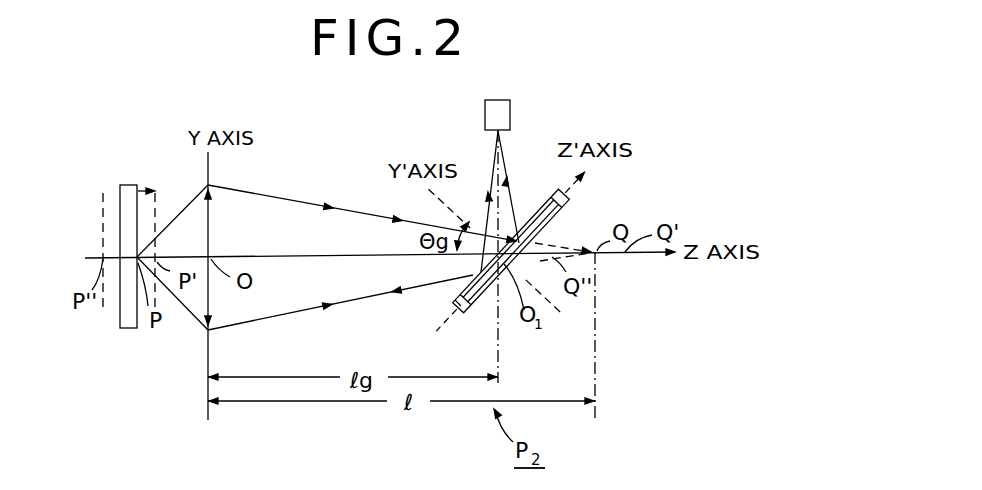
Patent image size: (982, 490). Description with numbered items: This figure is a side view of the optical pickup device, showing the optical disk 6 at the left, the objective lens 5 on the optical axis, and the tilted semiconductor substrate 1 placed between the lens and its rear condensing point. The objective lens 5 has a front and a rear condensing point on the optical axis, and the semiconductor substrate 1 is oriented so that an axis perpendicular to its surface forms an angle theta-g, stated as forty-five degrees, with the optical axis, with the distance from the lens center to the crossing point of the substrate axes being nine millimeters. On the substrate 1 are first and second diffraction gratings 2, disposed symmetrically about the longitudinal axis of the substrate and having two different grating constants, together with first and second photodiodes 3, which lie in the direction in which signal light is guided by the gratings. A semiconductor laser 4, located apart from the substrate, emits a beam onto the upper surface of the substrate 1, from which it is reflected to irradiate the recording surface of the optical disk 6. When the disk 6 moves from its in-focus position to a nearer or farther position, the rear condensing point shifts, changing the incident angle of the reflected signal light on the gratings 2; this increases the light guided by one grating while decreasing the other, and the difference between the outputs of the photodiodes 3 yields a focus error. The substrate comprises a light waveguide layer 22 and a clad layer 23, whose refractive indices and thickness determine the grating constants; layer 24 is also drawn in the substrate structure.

The semiconductor substrate 1 is at (512, 261).
The diffraction grating 2 is at (514, 240).
The photodiode 3 is at (555, 197).
The semiconductor laser 4 is at (498, 100).
The objective lens 5 is at (212, 218).
The optical disk 6 is at (128, 185).
The light waveguide layer 22 is at (486, 292).
The clad layer 23 is at (452, 312).
The cover layer 24 is at (500, 285).